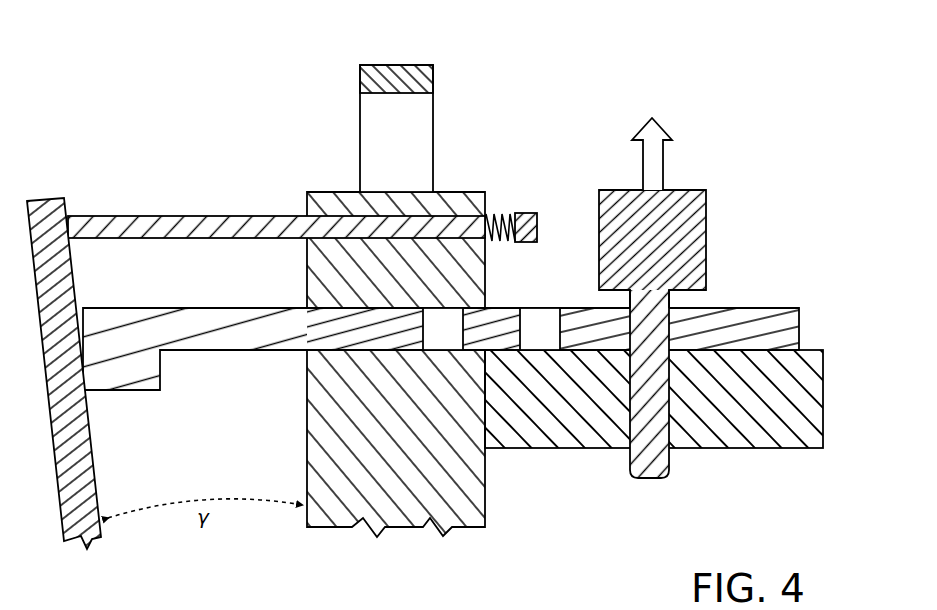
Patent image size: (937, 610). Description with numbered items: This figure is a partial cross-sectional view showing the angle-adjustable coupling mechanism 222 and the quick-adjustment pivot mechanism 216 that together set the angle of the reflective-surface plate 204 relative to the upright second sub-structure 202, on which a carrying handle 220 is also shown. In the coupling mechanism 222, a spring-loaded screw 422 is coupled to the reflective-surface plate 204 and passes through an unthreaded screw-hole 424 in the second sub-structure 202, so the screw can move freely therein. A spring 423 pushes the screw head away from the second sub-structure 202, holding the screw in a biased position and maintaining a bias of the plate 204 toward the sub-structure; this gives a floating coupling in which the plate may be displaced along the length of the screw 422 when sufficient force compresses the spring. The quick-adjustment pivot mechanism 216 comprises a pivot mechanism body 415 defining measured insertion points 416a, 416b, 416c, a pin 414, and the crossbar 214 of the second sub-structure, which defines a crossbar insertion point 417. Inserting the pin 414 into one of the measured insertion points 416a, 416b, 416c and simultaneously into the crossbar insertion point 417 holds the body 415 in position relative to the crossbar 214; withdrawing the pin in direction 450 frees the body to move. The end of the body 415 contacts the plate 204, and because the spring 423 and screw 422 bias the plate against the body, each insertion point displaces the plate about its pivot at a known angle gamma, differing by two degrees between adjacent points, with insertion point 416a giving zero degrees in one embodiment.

The second sub-structure 202 is at (402, 529).
The reflective-surface plate 204 is at (41, 198).
The crossbar 214 is at (823, 351).
The quick-adjustment pivot mechanism 216 is at (651, 65).
The carrying handle 220 is at (392, 65).
The angle-adjustable coupling mechanism 222 is at (142, 97).
The pin 414 is at (707, 203).
The quick-adjustment pivot mechanism body 415 is at (133, 392).
The measured insertion point 416a is at (465, 333).
The measured insertion point 416b is at (536, 307).
The measured insertion point 416c is at (678, 303).
The crossbar insertion point 417 is at (618, 459).
The spring-loaded screw 422 is at (183, 216).
The spring 423 is at (494, 212).
The screw-hole 424 is at (294, 250).
The direction 450 is at (650, 168).